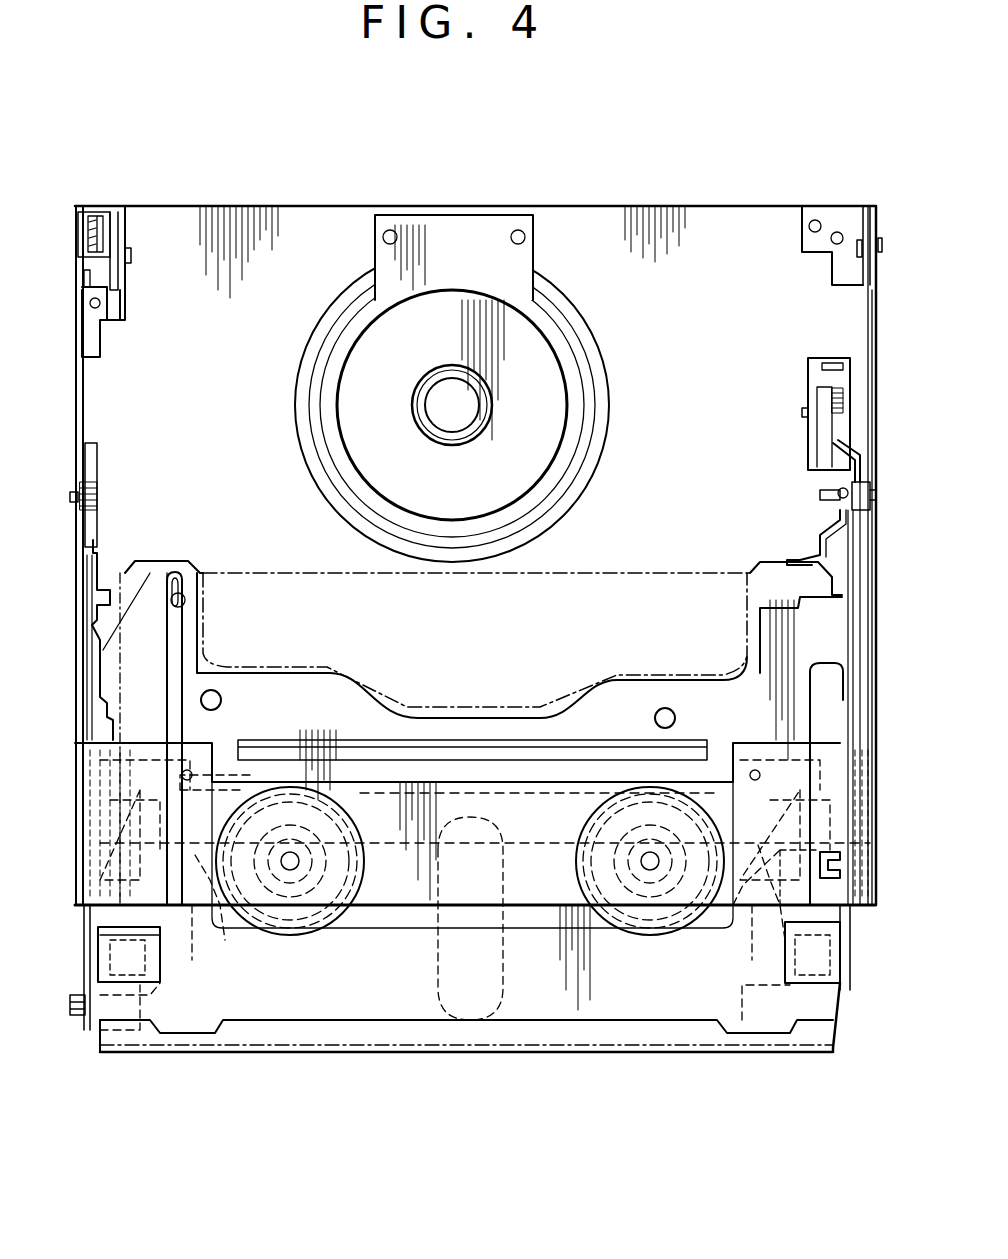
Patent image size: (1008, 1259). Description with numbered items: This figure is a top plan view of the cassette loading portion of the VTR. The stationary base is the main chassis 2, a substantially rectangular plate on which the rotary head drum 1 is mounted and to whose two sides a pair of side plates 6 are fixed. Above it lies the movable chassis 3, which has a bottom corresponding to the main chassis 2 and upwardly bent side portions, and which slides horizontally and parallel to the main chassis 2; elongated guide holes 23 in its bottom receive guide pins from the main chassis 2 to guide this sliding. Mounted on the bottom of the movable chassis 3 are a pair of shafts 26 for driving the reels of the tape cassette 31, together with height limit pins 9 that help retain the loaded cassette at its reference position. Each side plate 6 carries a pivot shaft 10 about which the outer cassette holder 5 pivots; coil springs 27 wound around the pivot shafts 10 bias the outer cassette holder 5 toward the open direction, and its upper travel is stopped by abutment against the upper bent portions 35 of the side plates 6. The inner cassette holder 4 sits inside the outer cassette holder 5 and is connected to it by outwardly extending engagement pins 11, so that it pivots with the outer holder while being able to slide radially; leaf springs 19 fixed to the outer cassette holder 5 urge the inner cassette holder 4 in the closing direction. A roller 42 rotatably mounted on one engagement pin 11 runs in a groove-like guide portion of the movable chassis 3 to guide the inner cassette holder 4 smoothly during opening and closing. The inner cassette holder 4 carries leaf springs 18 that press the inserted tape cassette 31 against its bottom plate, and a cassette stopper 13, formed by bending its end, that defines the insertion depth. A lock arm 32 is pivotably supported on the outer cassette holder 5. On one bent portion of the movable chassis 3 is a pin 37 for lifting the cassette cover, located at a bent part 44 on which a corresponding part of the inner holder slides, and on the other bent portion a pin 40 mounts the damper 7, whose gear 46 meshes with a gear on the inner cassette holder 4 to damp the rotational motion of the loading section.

The rotary head drum 1 is at (540, 362).
The main chassis 2 is at (612, 206).
The movable chassis 3 is at (80, 990).
The inner cassette holder 4 is at (295, 1033).
The outer cassette holder 5 is at (878, 705).
The side plates 6 is at (125, 225).
The damper 7 is at (820, 380).
The height limit pins 9 is at (221, 700).
The pivot shafts 10 is at (131, 258).
The engagement pins 11 is at (820, 492).
The cassette stopper 13 is at (797, 555).
The leaf springs 18 is at (148, 982).
The leaf springs 19 is at (222, 905).
The elongated guide holes 23 is at (178, 600).
The shafts 26 is at (295, 880).
The coil springs 27 is at (90, 215).
The tape cassette 31 is at (445, 705).
The lock arm 32 is at (850, 866).
The upper bent portions 35 is at (110, 212).
The pin 37 is at (100, 622).
The pin 40 is at (802, 412).
The roller 42 is at (880, 508).
The bent part 44 is at (100, 567).
The gear 46 is at (843, 402).